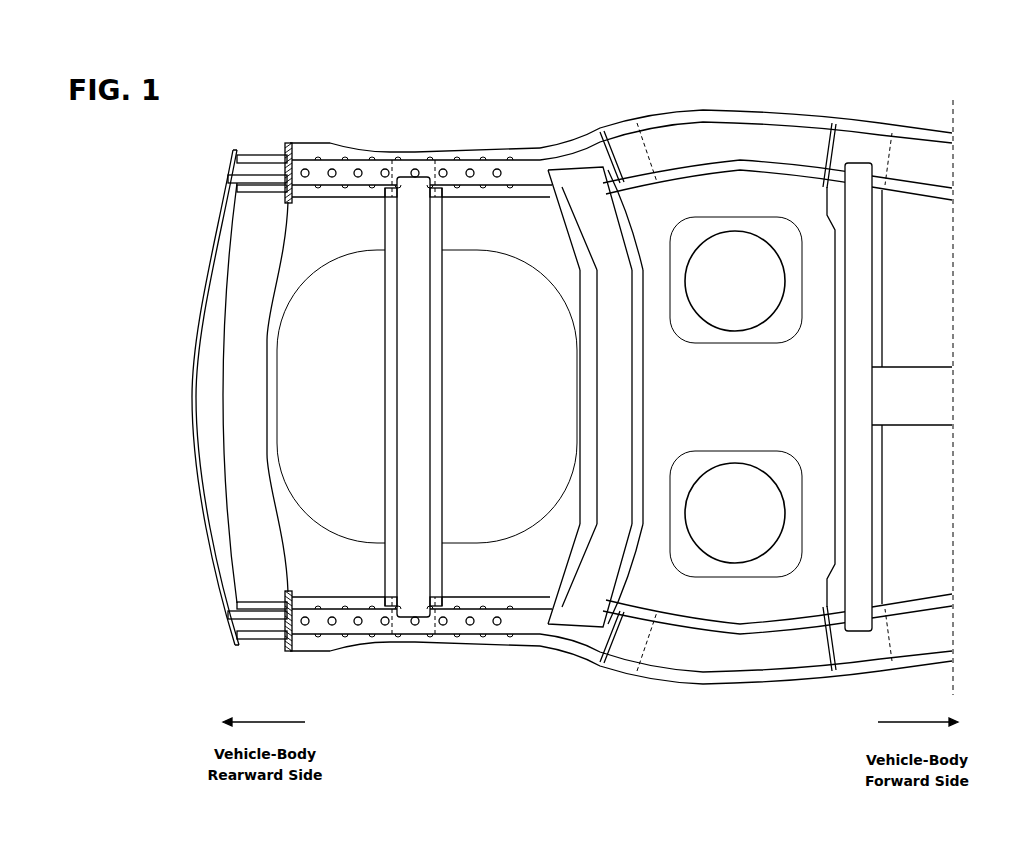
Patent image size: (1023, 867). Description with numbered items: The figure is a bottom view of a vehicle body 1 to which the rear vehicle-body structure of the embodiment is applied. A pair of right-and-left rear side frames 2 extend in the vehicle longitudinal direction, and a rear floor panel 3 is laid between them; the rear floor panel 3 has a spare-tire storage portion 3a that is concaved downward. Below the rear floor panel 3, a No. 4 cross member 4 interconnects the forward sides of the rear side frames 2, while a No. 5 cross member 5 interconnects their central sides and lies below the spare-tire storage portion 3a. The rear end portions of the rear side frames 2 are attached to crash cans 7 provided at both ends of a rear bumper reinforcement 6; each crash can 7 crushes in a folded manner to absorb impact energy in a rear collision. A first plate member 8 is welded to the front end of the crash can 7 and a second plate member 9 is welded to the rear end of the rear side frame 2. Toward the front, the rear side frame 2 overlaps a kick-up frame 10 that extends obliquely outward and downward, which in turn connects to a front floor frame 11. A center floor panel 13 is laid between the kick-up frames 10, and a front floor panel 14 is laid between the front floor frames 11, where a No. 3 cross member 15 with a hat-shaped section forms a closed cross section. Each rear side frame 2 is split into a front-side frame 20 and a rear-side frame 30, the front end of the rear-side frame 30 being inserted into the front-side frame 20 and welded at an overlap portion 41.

The vehicle body 1 is at (950, 64).
The rear side frame 2 is at (499, 150).
The rear floor panel 3 is at (284, 252).
The spare-tire storage portion 3a is at (300, 521).
The No. 4 cross member 4 is at (628, 380).
The No. 5 cross member 5 is at (430, 393).
The rear bumper reinforcement 6 is at (191, 345).
The crash can 7 is at (249, 157).
The first plate member 8 is at (284, 157).
The second plate member 9 is at (290, 147).
The kick-up frame 10 is at (705, 108).
The front floor frame 11 is at (938, 157).
The center floor panel 13 is at (745, 190).
The front floor panel 14 is at (938, 247).
The No. 3 cross member 15 is at (866, 310).
The front-side frame 20 is at (448, 160).
The rear-side frame 30 is at (336, 160).
The overlap portion 41 is at (412, 176).